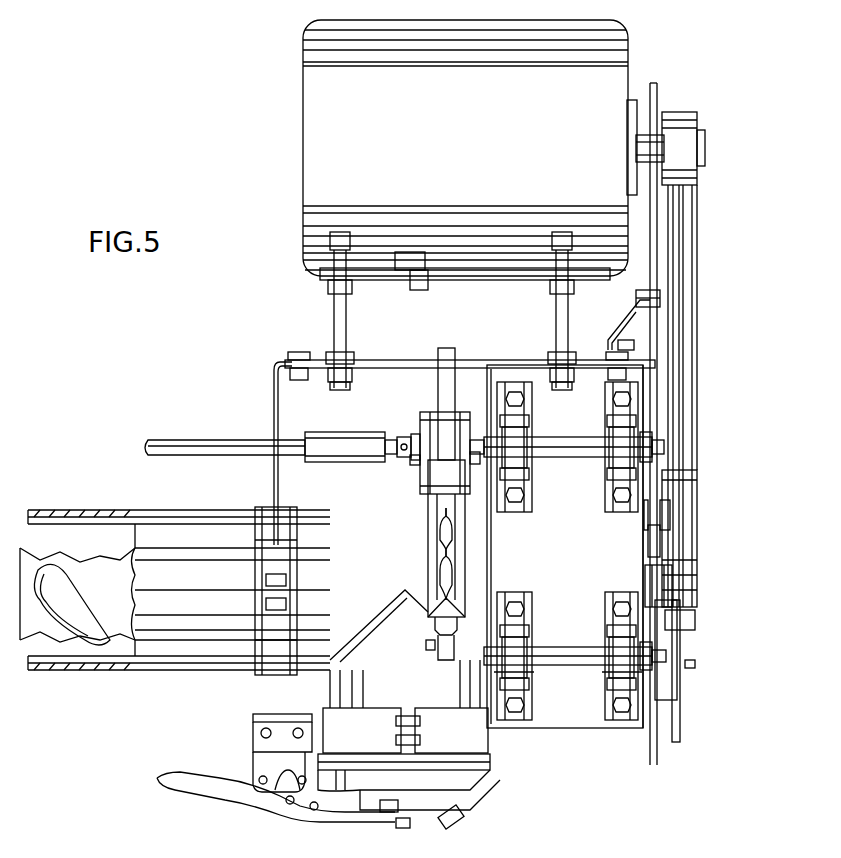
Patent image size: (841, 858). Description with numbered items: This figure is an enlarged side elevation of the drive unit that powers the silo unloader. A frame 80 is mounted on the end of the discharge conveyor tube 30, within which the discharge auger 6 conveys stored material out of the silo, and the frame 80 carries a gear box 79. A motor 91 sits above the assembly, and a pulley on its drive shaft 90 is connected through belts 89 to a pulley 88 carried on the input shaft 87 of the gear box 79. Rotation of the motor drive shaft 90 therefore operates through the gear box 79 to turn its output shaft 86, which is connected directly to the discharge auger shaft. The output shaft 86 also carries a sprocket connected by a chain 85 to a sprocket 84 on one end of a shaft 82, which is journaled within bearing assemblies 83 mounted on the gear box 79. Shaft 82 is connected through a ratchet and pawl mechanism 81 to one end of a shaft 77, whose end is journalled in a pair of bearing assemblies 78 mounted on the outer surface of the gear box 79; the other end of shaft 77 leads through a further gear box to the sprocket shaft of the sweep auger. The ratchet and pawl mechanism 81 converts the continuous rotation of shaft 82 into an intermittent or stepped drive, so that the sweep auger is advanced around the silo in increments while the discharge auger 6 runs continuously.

The discharge auger 6 is at (62, 516).
The discharge conveyor tube 30 is at (110, 512).
The shaft 77 is at (222, 440).
The bearing assemblies 78 is at (620, 460).
The gear box 79 is at (572, 715).
The frame 80 is at (272, 392).
The ratchet and pawl mechanism 81 is at (426, 549).
The shaft 82 is at (566, 650).
The bearing assemblies 83 is at (618, 658).
The sprocket 84 is at (680, 695).
The chain 85 is at (680, 618).
The output shaft 86 is at (650, 585).
The input shaft 87 is at (660, 538).
The pulley 88 is at (697, 486).
The belts 89 is at (680, 373).
The drive shaft 90 is at (655, 140).
The motor 91 is at (476, 145).